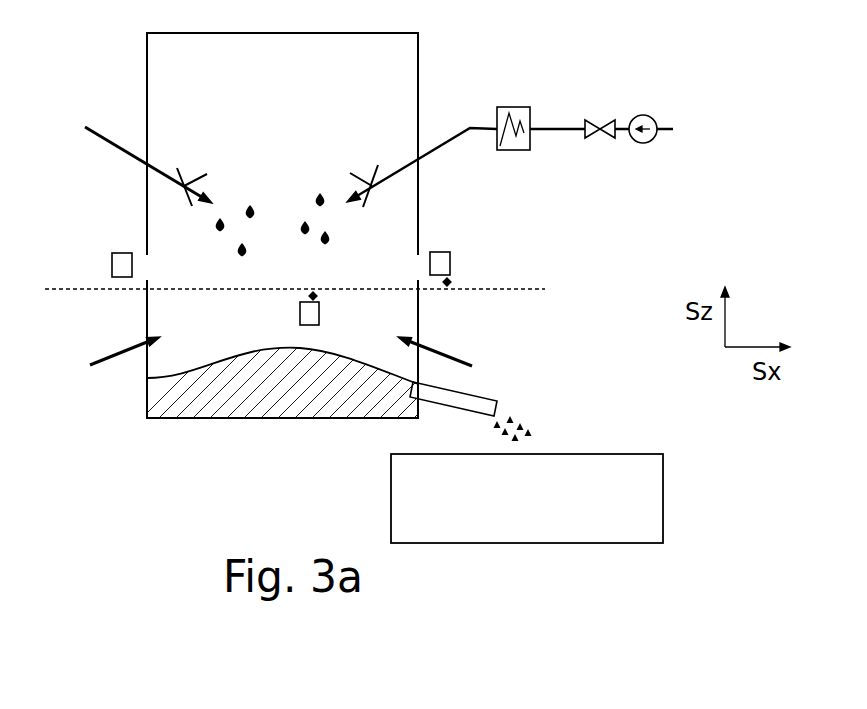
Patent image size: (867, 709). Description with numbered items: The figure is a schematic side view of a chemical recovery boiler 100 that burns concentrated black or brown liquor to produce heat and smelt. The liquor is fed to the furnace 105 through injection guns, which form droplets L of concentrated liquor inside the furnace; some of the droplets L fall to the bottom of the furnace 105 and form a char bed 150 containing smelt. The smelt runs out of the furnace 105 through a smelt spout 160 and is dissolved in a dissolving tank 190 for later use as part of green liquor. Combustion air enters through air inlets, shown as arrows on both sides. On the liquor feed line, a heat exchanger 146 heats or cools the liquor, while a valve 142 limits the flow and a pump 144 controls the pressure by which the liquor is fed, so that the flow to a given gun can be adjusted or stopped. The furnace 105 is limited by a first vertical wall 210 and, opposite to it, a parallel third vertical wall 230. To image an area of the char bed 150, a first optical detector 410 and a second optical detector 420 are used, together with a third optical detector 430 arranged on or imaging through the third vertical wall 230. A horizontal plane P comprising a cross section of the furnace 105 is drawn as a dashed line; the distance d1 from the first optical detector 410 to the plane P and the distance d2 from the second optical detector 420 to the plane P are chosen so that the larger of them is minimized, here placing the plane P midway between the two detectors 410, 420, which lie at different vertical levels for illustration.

The chemical recovery boiler 100 is at (589, 259).
The furnace 105 is at (287, 86).
The valve 142 is at (600, 124).
The pump 144 is at (643, 115).
The heat exchanger 146 is at (501, 99).
The char bed 150 is at (316, 376).
The smelt spout 160 is at (480, 397).
The dissolving tank 190 is at (507, 514).
The first vertical wall 210 is at (418, 65).
The third vertical wall 230 is at (147, 64).
The first optical detector 410 is at (444, 263).
The second optical detector 420 is at (300, 312).
The third optical detector 430 is at (122, 265).
The droplets of concentrated liquor L is at (315, 197).
The horizontal plane P is at (68, 291).
The distance from first optical detector to horizontal plane d1 is at (451, 283).
The distance from second optical detector to horizontal plane d2 is at (316, 295).
The element smelt is at (536, 409).